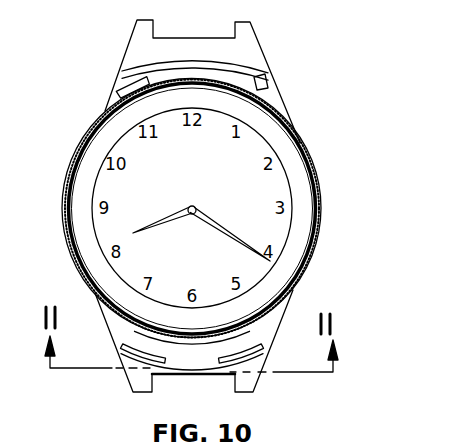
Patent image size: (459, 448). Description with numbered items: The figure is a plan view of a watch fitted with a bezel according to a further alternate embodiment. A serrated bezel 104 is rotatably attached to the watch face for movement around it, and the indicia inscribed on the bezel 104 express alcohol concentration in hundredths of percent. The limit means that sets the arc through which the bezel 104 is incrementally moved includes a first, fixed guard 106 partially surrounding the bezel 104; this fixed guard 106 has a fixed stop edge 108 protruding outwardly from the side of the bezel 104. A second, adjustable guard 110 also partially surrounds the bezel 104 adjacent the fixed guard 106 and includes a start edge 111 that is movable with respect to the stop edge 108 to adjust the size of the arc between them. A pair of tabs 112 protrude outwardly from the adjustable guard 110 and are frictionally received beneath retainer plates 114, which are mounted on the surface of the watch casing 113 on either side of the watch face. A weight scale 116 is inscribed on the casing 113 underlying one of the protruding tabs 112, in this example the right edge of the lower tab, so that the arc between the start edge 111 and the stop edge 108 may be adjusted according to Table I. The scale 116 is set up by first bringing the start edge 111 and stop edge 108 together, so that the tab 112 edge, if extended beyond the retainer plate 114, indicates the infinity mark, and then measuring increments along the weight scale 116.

The serrated bezel 104 is at (306, 186).
The fixed guard 106 is at (307, 275).
The stop edge 108 is at (318, 214).
The adjustable guard 110 is at (68, 249).
The start edge 111 is at (230, 69).
The tabs 112 is at (135, 82).
The watch casing 113 is at (252, 50).
The retainer plates 114 is at (258, 80).
The weight scale 116 is at (191, 339).